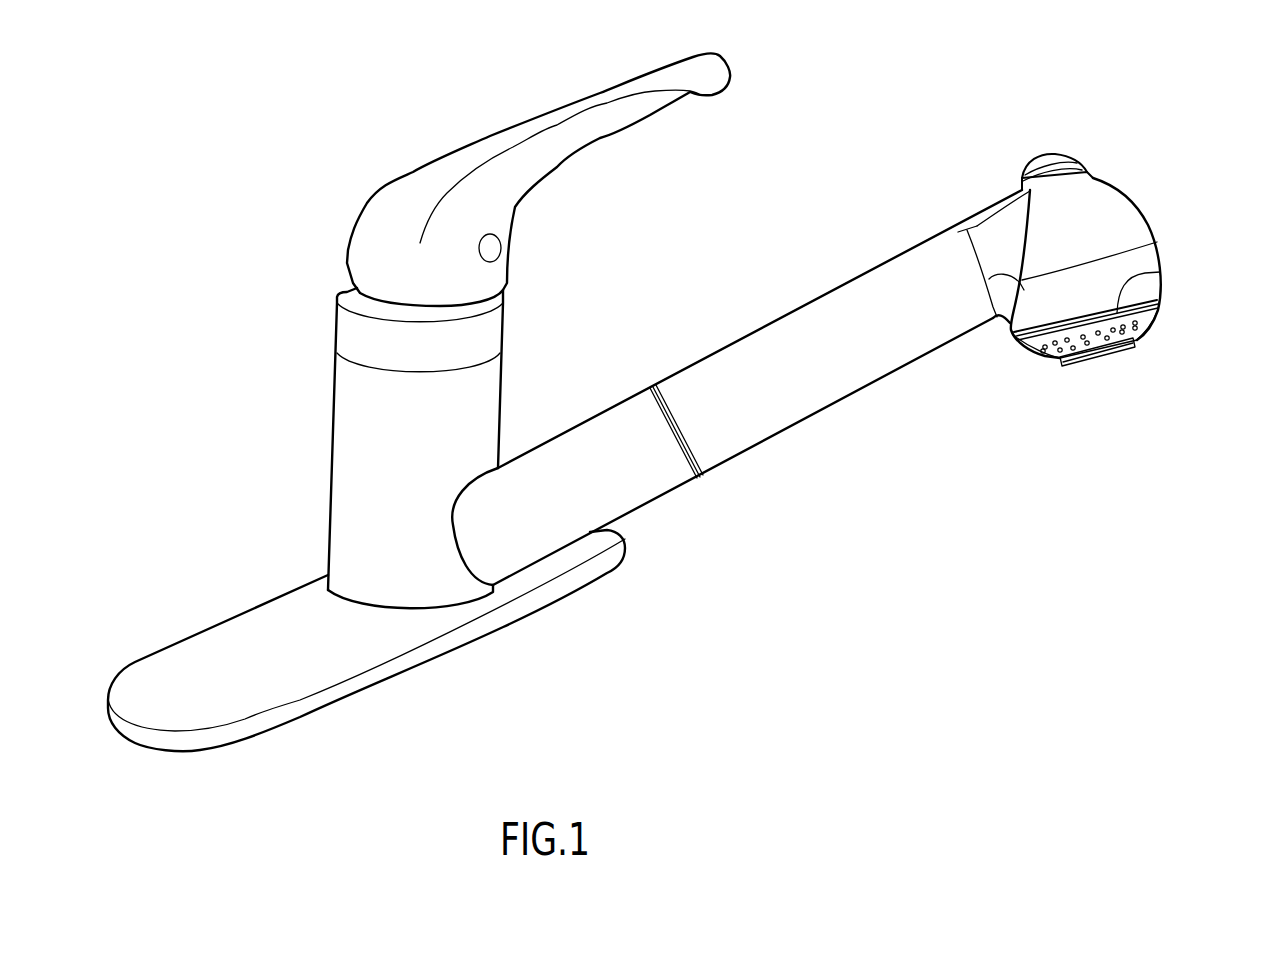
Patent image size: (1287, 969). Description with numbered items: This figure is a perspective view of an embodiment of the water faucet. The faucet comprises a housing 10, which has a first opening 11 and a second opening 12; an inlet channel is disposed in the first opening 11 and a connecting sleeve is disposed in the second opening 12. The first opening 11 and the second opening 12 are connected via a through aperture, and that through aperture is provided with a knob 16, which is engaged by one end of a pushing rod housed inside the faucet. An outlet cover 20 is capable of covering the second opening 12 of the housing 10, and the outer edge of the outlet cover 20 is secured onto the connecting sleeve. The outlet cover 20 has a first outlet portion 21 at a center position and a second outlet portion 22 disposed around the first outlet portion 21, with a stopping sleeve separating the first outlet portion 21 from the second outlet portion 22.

The housing 10 is at (883, 387).
The first opening 11 is at (677, 433).
The second opening 12 is at (1173, 260).
The knob 16 is at (1049, 156).
The outlet cover 20 is at (1148, 335).
The first outlet portion 21 is at (1103, 357).
The second outlet portion 22 is at (1057, 355).